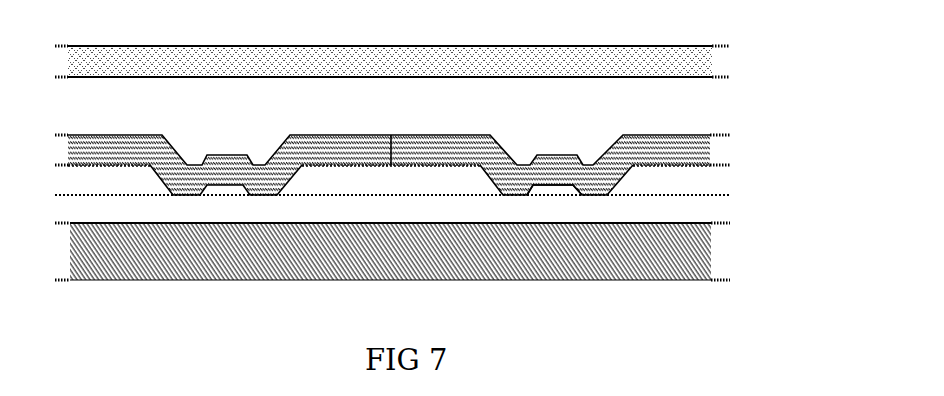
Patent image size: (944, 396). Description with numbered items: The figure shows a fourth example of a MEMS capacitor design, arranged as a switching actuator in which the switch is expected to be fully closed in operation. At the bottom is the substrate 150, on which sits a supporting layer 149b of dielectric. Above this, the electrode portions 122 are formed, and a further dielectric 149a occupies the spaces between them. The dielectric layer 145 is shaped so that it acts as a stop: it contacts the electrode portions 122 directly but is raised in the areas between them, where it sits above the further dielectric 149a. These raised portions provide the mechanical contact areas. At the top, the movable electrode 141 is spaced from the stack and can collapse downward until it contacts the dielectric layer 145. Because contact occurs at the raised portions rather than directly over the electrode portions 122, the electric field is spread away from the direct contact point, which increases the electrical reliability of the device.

The movable electrode 141 is at (720, 56).
The dielectric layer 145 is at (720, 153).
The electrode portions 122 is at (553, 186).
The further dielectric 149a is at (720, 183).
The supporting layer 149b is at (718, 208).
The substrate 150 is at (720, 252).